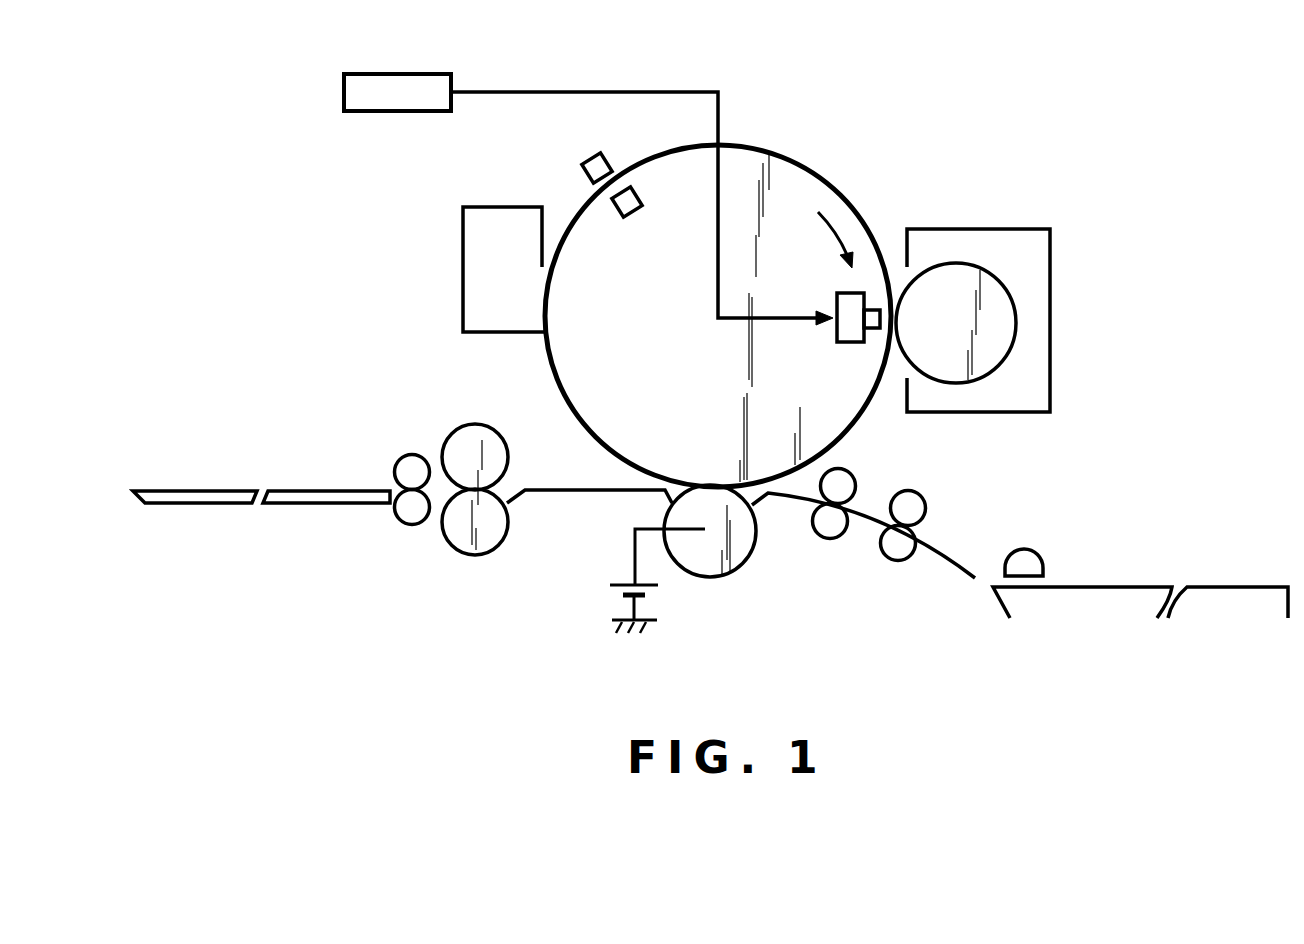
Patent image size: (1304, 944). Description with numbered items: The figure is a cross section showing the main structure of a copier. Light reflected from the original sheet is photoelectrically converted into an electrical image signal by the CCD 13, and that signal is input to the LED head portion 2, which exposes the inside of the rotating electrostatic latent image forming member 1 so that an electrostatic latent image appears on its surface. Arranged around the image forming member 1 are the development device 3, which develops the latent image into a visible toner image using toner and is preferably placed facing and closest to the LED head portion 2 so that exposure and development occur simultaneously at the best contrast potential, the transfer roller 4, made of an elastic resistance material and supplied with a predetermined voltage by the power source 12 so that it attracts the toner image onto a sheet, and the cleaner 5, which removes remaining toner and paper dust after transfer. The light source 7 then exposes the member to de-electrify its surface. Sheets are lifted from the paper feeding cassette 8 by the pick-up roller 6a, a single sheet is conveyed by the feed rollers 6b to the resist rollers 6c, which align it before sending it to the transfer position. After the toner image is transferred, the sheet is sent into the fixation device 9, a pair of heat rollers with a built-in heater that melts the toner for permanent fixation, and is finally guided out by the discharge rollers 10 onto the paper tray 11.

The electrostatic latent image forming member 1 is at (597, 438).
The LED head portion 2 is at (851, 342).
The development device 3 is at (988, 247).
The transfer roller 4 is at (742, 549).
The cleaner 5 is at (465, 274).
The pick-up roller 6a is at (1030, 560).
The feed rollers 6b is at (911, 500).
The resist rollers 6c is at (834, 531).
The light source 7 is at (628, 190).
The paper feeding cassette 8 is at (1210, 600).
The fixation device 9 is at (452, 535).
The discharge rollers 10 is at (404, 473).
The paper tray 11 is at (220, 497).
The power source 12 is at (606, 597).
The CCD 13 is at (363, 100).